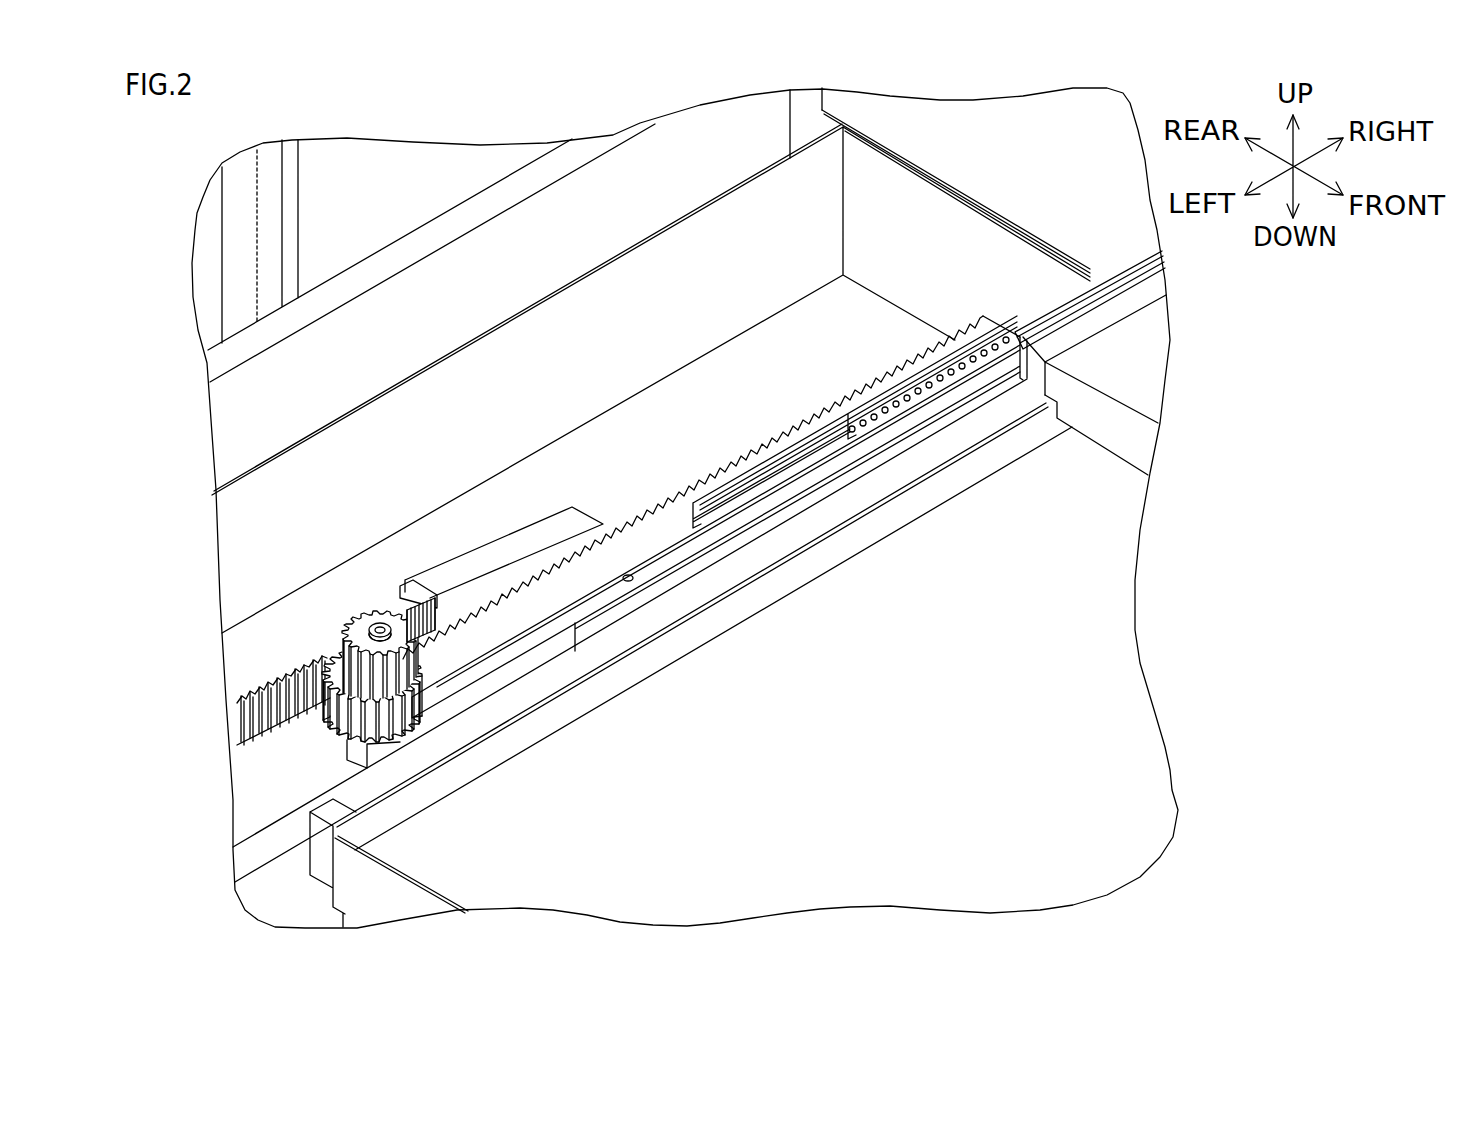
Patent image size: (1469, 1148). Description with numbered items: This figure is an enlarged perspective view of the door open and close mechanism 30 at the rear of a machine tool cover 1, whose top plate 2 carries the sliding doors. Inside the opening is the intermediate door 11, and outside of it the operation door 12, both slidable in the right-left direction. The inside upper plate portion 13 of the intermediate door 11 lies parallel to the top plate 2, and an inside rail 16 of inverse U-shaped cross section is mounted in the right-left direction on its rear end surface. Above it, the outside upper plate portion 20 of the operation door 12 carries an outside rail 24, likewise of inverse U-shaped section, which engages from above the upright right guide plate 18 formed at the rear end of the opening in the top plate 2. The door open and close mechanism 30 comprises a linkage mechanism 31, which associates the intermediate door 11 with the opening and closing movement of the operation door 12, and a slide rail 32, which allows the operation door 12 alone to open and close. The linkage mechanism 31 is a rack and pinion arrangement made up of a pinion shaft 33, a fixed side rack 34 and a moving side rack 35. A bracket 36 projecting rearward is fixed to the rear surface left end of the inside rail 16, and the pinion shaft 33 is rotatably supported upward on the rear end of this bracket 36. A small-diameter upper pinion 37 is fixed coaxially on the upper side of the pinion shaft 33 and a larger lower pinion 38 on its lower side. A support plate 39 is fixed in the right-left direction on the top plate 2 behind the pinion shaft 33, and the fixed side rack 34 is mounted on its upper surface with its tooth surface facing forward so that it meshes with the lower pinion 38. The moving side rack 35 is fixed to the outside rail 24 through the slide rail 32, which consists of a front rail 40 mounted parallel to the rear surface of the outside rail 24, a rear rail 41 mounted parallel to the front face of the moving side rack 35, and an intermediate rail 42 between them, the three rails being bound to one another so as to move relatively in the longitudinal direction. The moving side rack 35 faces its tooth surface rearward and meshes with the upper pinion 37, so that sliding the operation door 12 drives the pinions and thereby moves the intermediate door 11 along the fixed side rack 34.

The cover 1 is at (651, 371).
The top plate 2 is at (705, 372).
The intermediate door 11 is at (730, 653).
The operation door 12 is at (1158, 401).
The inside upper plate portion 13 is at (730, 653).
The inside rail 16 is at (440, 752).
The right guide plate 18 is at (1053, 441).
The outside upper plate portion 20 is at (1158, 401).
The outside rail 24 is at (1162, 287).
The door open and close mechanism 30 is at (347, 599).
The linkage mechanism 31 is at (422, 576).
The slide rail 32 is at (715, 538).
The pinion shaft 33 is at (357, 633).
The fixed side rack 34 is at (243, 714).
The moving side rack 35 is at (567, 573).
The bracket 36 is at (370, 748).
The upper pinion 37 is at (340, 660).
The lower pinion 38 is at (337, 715).
The support plate 39 is at (525, 548).
The front rail 40 is at (1060, 305).
The rear rail 41 is at (662, 558).
The intermediate rail 42 is at (820, 487).